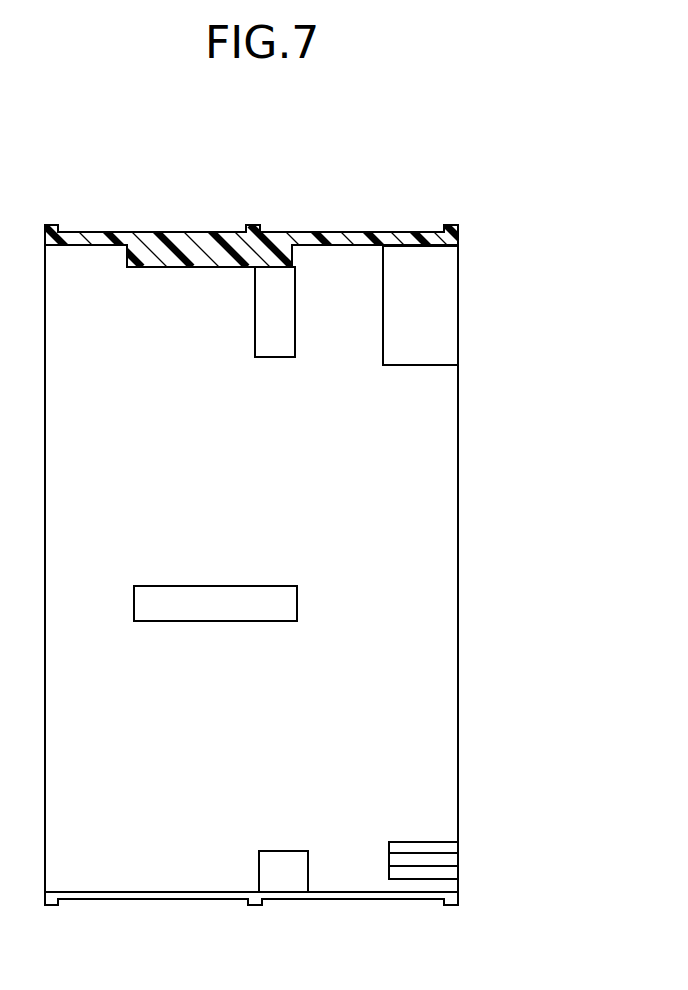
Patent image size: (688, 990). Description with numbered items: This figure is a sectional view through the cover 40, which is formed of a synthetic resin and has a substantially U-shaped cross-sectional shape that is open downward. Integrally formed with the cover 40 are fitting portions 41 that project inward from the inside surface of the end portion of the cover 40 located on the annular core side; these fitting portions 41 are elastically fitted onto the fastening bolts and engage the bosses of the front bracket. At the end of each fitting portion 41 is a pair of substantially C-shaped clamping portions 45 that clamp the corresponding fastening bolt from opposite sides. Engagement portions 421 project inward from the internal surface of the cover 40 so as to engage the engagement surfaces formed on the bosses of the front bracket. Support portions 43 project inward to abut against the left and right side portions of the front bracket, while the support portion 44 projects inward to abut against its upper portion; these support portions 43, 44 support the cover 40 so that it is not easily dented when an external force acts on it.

The cover 40 is at (150, 232).
The fitting portion 41 is at (420, 300).
The engagement portion 421 is at (278, 866).
The support portion 43 is at (208, 592).
The support portion 44 is at (170, 270).
The clamping portion 45 is at (440, 873).